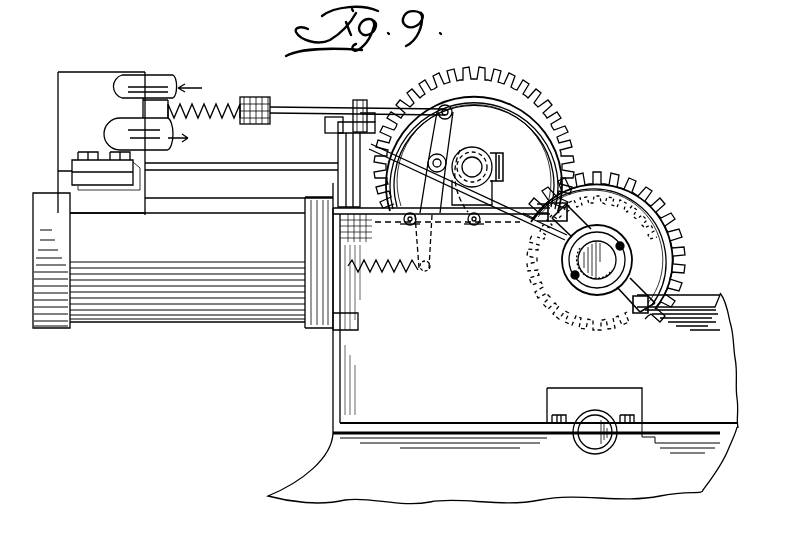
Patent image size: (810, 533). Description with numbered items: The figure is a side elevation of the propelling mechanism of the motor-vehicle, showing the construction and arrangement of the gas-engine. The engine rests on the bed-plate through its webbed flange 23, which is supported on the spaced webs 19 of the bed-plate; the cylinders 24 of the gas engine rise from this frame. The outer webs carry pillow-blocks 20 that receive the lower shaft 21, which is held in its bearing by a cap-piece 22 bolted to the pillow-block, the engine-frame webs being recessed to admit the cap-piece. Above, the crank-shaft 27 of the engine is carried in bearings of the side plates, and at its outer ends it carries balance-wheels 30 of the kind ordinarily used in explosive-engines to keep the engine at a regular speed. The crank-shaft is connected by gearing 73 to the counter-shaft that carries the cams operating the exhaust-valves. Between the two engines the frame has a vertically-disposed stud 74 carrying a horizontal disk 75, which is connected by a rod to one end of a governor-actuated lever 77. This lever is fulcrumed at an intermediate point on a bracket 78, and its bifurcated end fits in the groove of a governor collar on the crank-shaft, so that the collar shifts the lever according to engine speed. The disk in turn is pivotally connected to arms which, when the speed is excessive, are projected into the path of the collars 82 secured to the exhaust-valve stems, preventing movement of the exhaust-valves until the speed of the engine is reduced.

The webs 19 is at (502, 465).
The pillow-blocks 20 is at (632, 438).
The shaft 21 is at (587, 440).
The cap-piece 22 is at (612, 410).
The webbed flange 23 is at (535, 291).
The cylinders 24 is at (195, 256).
The crank-shaft 27 is at (612, 259).
The balance-wheels 30 is at (593, 290).
The gearing 73 is at (489, 139).
The stud 74 is at (338, 152).
The disk 75 is at (325, 128).
The governor-actuated lever 77 is at (524, 228).
The bracket 78 is at (499, 202).
The collars 82 is at (344, 100).